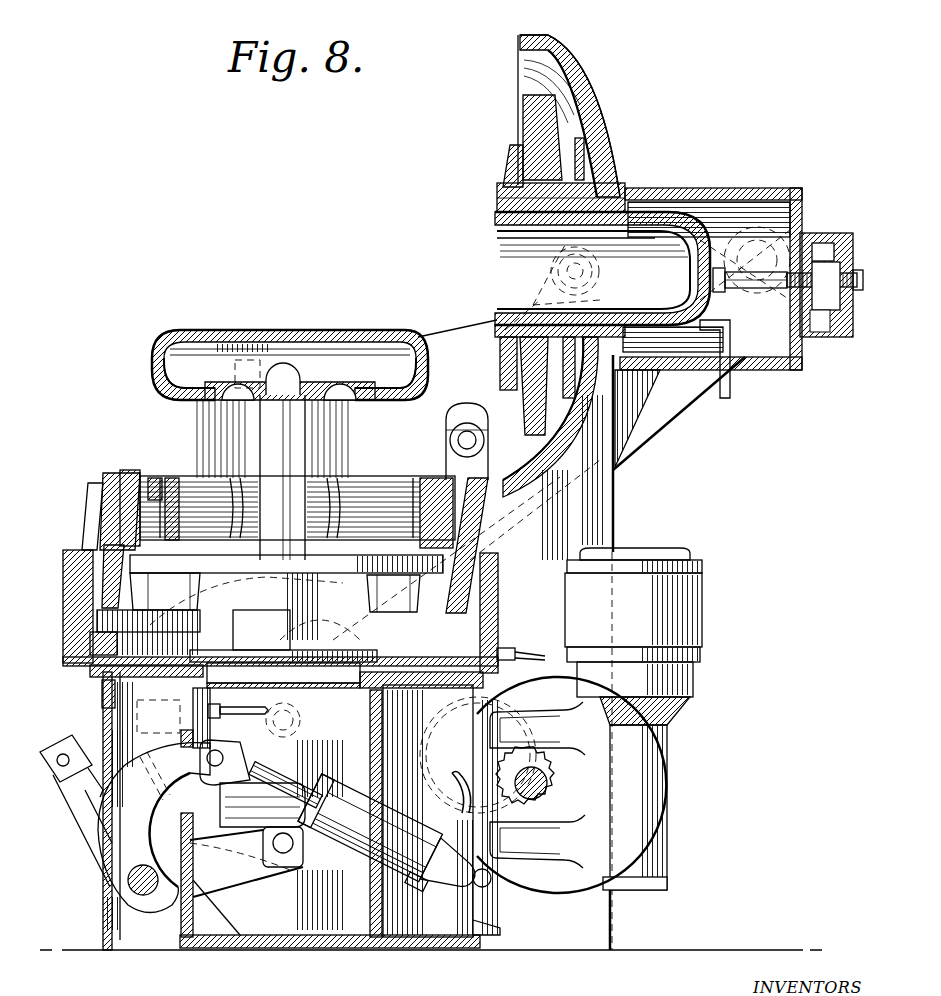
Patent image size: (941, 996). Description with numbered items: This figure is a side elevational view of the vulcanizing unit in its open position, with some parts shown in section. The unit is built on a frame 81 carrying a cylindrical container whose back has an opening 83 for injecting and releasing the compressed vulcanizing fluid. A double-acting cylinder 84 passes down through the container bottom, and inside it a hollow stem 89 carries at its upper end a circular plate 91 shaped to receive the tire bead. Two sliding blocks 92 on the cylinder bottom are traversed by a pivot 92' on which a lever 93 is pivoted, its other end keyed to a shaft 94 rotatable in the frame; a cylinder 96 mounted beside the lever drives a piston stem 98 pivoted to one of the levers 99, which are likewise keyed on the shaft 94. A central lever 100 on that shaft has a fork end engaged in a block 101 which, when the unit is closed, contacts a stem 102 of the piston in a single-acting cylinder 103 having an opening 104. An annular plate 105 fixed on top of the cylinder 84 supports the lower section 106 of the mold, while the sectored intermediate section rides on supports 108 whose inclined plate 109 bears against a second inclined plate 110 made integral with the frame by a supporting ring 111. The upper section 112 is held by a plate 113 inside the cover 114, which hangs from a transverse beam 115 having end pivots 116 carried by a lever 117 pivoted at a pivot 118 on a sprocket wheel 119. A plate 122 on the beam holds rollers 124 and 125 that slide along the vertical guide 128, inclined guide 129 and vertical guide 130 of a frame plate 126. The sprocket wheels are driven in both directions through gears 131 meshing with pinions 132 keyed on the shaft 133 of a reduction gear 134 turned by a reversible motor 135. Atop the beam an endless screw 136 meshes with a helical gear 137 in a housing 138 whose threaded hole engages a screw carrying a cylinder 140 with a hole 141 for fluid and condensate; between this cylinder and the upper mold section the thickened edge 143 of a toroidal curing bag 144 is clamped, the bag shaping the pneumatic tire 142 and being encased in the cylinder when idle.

The frame 81 is at (323, 952).
The opening 83 is at (497, 645).
The double-acting cylinder 84 is at (243, 621).
The hollow stem 89 is at (273, 425).
The circular plate 91 is at (320, 372).
The sliding blocks 92 is at (259, 874).
The pivot 92' is at (270, 877).
The lever 93 is at (217, 883).
The shaft 94 is at (133, 880).
The cylinder 96 is at (340, 858).
The piston stem 98 is at (267, 795).
The levers 99 is at (110, 842).
The lever 100 is at (78, 810).
The block 101 is at (183, 478).
The stem 102 is at (133, 725).
The single-acting cylinder 103 is at (137, 700).
The opening 104 is at (238, 710).
The annular plate 105 is at (187, 558).
The lower section of mold 106 is at (424, 598).
The supports 108 is at (115, 473).
The inclined plane or plate 109 is at (102, 485).
The second inclined plane or plate 110 is at (93, 512).
The supporting ring 111 is at (87, 548).
The upper section of mold 112 is at (508, 165).
The plate 113 is at (557, 115).
The cover 114 is at (560, 56).
The transverse beam 115 is at (723, 190).
The pivot 116 is at (760, 262).
The lever 117 is at (357, 488).
The pivot 118 is at (428, 811).
The sprocket wheel 119 is at (457, 722).
The plate 122 is at (652, 422).
The rollers 124 is at (550, 268).
The rollers 125 is at (442, 434).
The plate 126 is at (602, 503).
The vertical guide 128 is at (262, 438).
The inclined guide 129 is at (434, 332).
The vertical guide 130 is at (438, 462).
The gears 131 is at (512, 822).
The pinions 132 is at (571, 752).
The shaft 133 is at (548, 786).
The reduction gear 134 is at (627, 773).
The reversible motor 135 is at (700, 586).
The endless screw 136 is at (815, 332).
The helical gear 137 is at (823, 250).
The housing 138 is at (840, 338).
The cylinder 140 is at (658, 215).
The hole 141 is at (690, 362).
The pneumatic tire 142 is at (263, 332).
The thickened edge 143 is at (500, 200).
The curing bag 144 is at (497, 230).